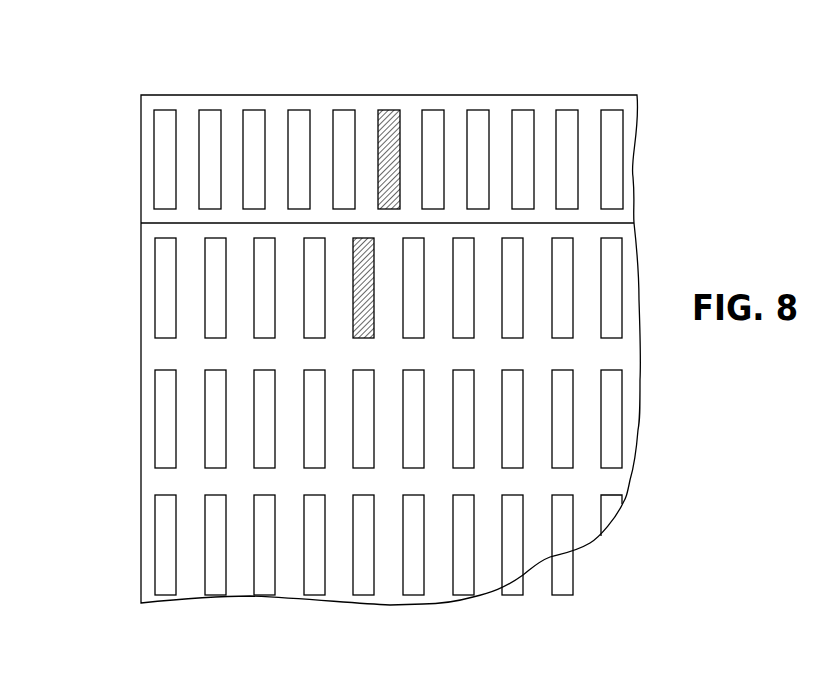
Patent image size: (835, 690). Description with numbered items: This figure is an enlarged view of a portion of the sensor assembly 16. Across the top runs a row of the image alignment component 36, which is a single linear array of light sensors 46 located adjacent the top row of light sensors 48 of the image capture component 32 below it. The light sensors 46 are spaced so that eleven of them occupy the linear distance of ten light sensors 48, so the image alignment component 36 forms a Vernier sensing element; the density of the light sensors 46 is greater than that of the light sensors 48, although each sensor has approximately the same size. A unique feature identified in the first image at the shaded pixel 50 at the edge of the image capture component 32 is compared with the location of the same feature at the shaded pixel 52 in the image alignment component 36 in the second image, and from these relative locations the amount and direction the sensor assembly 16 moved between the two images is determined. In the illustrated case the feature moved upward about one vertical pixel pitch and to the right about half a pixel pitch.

The sensor assembly 16 is at (285, 95).
The image capture component 32 is at (320, 416).
The image alignment component 36 is at (328, 128).
The light sensors 46 is at (165, 112).
The light sensors 48 is at (212, 307).
The shaded pixel 50 is at (362, 238).
The shaded pixel 52 is at (390, 110).